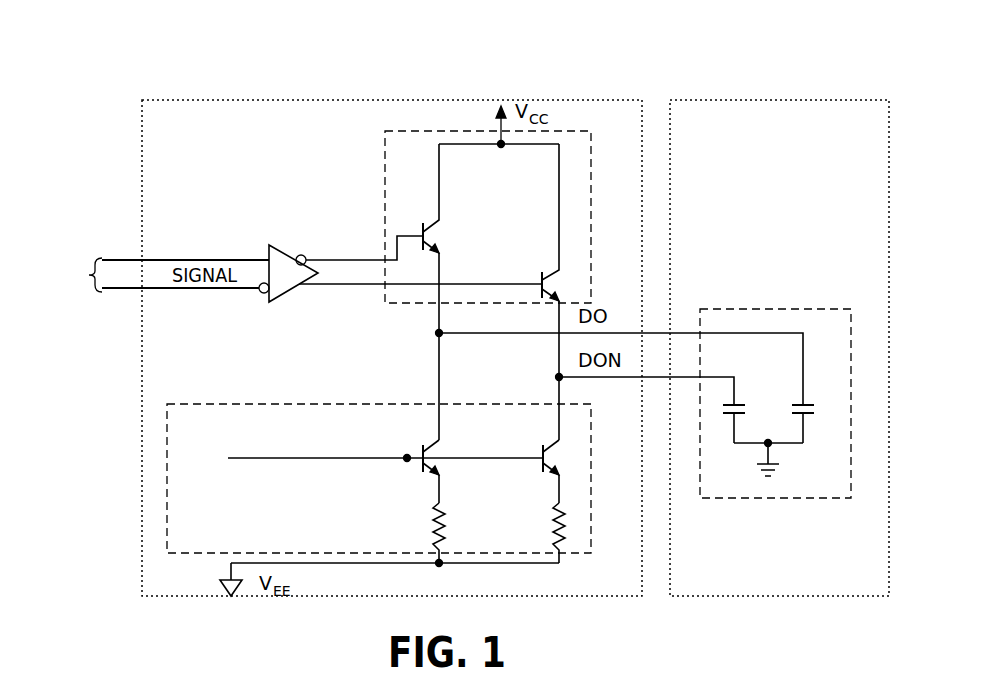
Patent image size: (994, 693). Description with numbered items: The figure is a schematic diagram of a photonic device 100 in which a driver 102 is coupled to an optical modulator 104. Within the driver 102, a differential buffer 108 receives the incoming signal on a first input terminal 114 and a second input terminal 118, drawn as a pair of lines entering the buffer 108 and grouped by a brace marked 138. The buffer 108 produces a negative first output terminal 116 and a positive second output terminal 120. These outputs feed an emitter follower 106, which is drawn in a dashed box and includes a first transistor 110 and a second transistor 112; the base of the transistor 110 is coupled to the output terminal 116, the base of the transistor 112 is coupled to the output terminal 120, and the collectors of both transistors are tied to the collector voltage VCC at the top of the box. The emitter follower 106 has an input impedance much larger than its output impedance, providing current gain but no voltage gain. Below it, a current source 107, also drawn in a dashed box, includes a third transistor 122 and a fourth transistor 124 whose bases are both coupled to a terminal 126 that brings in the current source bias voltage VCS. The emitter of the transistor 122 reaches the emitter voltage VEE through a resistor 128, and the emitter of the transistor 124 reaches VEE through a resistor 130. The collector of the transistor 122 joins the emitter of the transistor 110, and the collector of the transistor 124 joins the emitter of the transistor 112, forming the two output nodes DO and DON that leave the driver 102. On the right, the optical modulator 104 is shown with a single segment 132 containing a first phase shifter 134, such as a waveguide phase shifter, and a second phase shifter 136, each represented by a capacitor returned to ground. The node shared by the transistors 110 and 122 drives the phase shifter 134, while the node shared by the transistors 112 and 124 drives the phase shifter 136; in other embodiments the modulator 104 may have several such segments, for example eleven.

The photonic device 100 is at (718, 643).
The driver 102 is at (360, 100).
The optical modulator 104 is at (743, 100).
The emitter follower 106 is at (570, 130).
The current source 107 is at (167, 476).
The differential buffer 108 is at (282, 244).
The first transistor 110 is at (440, 230).
The second transistor 112 is at (553, 278).
The first input terminal 114 is at (217, 258).
The first output terminal 116 is at (345, 258).
The second input terminal 118 is at (222, 295).
The second output terminal 120 is at (343, 290).
The third transistor 122 is at (438, 453).
The fourth transistor 124 is at (562, 450).
The terminal 126 is at (288, 462).
The resistor 128 is at (433, 524).
The resistor 130 is at (554, 526).
The segment 132 is at (806, 309).
The first phase shifter 134 is at (808, 402).
The second phase shifter 136 is at (740, 402).
The differential input signal 138 is at (79, 275).